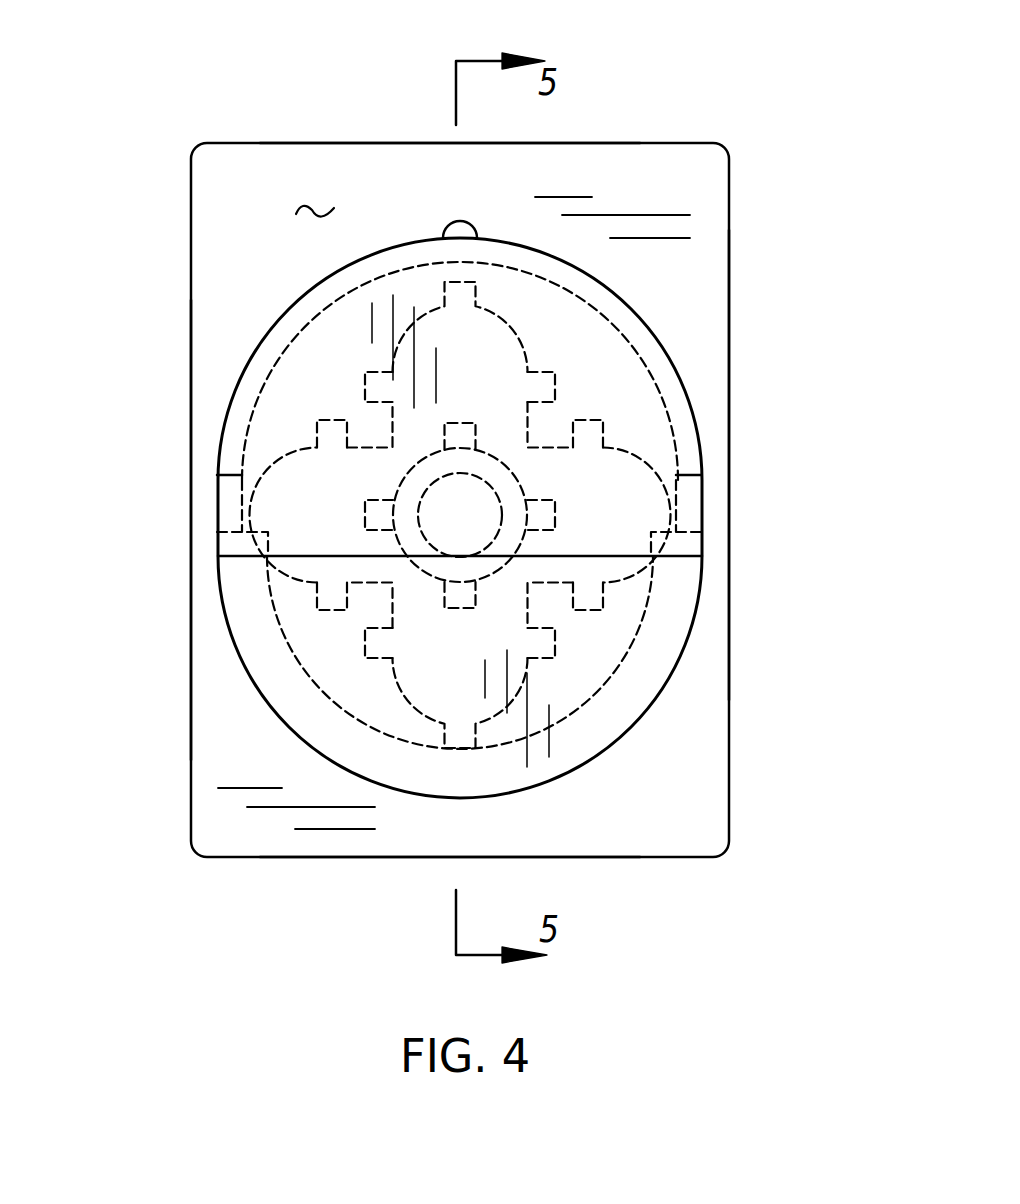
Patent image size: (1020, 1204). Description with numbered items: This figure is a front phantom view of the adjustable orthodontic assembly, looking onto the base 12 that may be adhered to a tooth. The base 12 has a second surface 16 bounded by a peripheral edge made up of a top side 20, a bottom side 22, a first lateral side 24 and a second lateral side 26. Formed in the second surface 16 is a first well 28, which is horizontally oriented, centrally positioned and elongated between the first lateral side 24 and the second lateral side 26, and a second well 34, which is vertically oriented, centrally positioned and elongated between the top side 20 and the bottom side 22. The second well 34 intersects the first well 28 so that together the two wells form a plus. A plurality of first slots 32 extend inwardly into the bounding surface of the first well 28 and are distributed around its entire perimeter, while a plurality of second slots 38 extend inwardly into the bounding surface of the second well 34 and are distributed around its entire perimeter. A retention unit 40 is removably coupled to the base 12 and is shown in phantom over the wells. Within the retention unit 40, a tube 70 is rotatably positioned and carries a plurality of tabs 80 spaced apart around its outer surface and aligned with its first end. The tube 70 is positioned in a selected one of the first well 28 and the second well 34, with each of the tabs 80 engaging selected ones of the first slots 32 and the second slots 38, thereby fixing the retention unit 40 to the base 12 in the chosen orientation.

The base 12 is at (727, 143).
The second surface 16 is at (322, 205).
The top side 20 is at (400, 143).
The bottom side 22 is at (318, 857).
The first lateral side 24 is at (190, 763).
The second lateral side 26 is at (730, 236).
The first well 28 is at (278, 460).
The first slots 32 is at (332, 420).
The second well 34 is at (510, 702).
The second slots 38 is at (390, 372).
The retention unit 40 is at (668, 333).
The tube 70 is at (521, 490).
The tabs 80 is at (366, 513).